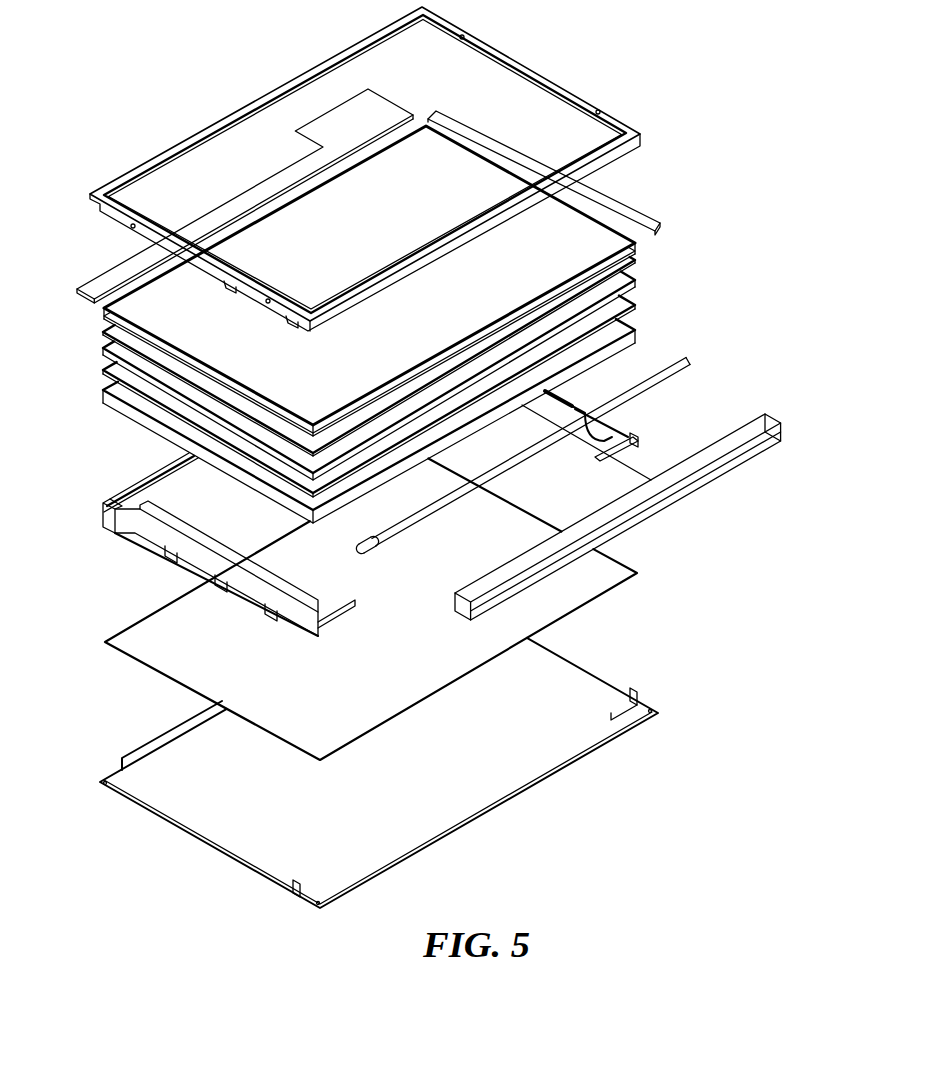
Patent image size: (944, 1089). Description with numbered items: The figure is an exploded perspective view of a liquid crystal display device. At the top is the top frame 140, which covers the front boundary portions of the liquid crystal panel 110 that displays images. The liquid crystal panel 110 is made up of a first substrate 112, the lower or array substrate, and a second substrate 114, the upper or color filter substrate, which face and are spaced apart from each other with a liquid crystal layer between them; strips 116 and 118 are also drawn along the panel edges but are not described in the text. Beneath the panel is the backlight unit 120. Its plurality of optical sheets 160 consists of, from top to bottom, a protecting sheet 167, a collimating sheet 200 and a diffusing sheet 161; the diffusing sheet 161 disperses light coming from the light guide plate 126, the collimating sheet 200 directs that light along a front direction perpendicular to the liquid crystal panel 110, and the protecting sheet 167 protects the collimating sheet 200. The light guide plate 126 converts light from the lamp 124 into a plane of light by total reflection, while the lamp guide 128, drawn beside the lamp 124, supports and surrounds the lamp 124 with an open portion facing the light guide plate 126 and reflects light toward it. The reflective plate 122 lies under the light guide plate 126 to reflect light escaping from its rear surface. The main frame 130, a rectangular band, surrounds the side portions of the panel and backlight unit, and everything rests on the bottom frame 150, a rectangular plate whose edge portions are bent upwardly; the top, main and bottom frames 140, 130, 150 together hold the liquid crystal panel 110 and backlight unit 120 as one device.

The liquid crystal panel 110 is at (417, 281).
The first substrate 112 is at (630, 257).
The second substrate 114 is at (613, 240).
The flexible printed circuit / tape carrier package 116 is at (443, 127).
The printed circuit board 118 is at (340, 118).
The backlight unit 120 is at (830, 615).
The reflective plate 122 is at (615, 590).
The lamp 124 is at (690, 363).
The light guide plate 126 is at (635, 322).
The lamp guide 128 is at (765, 420).
The main frame 130 is at (165, 545).
The top frame 140 is at (113, 185).
The bottom frame 150 is at (217, 830).
The optical sheets 160 is at (448, 363).
The diffusing sheet 161 is at (636, 310).
The protecting sheet 167 is at (637, 263).
The collimating sheet 200 is at (636, 287).